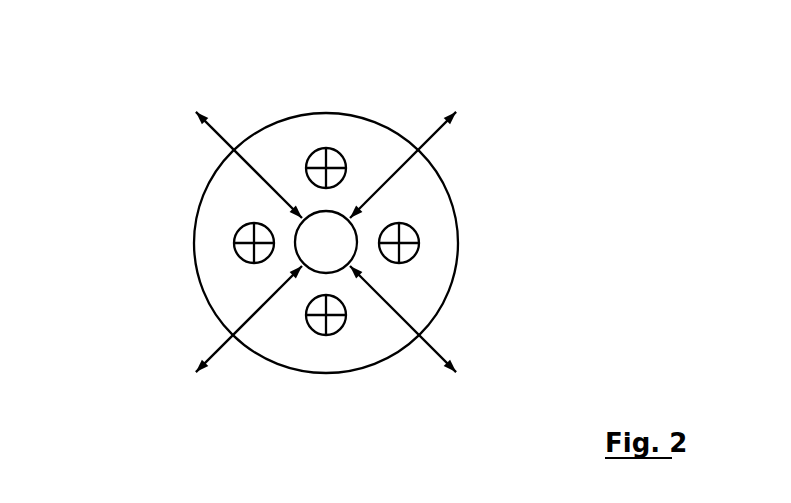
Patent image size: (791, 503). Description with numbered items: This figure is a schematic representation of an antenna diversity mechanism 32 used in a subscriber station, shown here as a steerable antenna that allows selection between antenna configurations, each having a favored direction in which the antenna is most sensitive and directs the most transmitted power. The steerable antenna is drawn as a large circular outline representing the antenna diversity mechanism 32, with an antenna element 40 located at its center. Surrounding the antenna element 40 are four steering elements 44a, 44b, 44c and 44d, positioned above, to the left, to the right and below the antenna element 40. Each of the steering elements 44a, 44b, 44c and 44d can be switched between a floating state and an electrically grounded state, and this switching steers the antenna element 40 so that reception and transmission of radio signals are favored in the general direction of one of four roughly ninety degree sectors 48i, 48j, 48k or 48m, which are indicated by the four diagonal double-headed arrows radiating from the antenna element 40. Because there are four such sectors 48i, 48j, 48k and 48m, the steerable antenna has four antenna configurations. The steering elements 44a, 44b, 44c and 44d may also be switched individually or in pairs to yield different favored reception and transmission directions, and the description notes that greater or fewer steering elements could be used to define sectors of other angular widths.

The antenna diversity mechanism 32 is at (463, 251).
The antenna element 40 is at (326, 242).
The steering element 44a is at (233, 242).
The steering element 44b is at (342, 148).
The steering element 44c is at (413, 260).
The steering element 44d is at (325, 338).
The sector 48i is at (233, 148).
The sector 48j is at (418, 152).
The sector 48k is at (413, 330).
The sector 48m is at (229, 330).